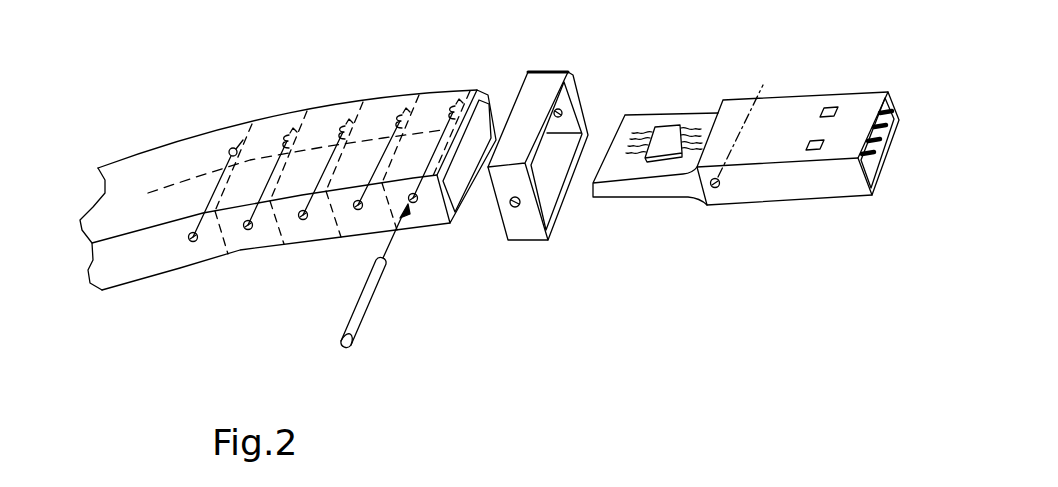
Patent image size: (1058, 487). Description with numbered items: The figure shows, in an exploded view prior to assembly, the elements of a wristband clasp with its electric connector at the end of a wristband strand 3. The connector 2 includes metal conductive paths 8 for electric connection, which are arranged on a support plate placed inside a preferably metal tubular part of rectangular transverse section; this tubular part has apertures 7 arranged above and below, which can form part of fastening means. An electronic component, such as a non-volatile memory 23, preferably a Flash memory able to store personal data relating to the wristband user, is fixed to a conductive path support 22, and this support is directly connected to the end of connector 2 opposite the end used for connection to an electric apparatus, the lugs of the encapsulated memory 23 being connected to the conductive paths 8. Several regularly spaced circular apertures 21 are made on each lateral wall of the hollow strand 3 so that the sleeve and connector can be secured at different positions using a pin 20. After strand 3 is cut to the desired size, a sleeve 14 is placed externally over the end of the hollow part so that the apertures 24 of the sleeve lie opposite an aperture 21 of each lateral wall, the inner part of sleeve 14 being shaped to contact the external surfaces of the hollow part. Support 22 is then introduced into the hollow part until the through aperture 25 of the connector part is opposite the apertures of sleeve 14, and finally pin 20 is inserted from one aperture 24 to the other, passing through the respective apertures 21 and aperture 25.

The electric connector 2 is at (777, 105).
The strand 3 is at (185, 165).
The apertures 7 is at (832, 107).
The metal conductive paths 8 is at (893, 130).
The sleeve 14 is at (550, 82).
The pin 20 is at (373, 294).
The circular apertures 21 is at (303, 220).
The conductive path support 22 is at (667, 190).
The non-volatile memory 23 is at (673, 133).
The apertures of the sleeve 24 is at (515, 210).
The through aperture 25 is at (716, 190).